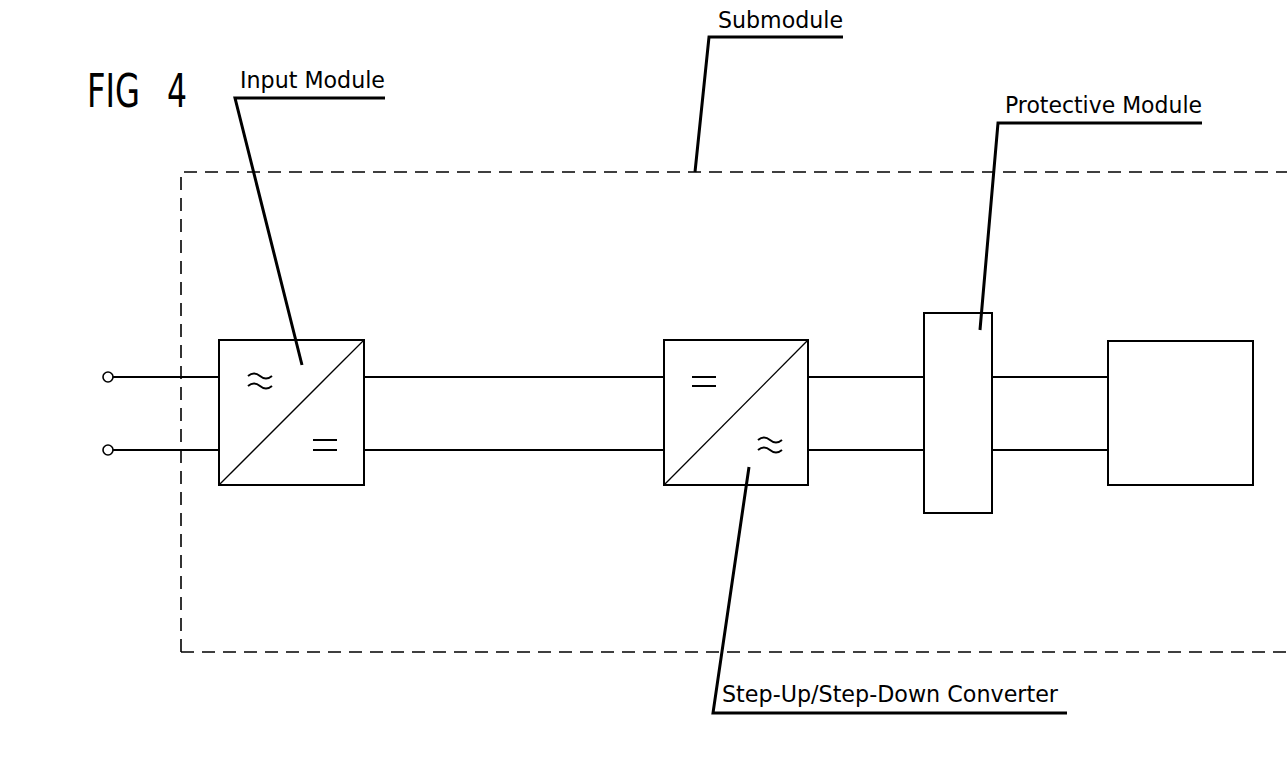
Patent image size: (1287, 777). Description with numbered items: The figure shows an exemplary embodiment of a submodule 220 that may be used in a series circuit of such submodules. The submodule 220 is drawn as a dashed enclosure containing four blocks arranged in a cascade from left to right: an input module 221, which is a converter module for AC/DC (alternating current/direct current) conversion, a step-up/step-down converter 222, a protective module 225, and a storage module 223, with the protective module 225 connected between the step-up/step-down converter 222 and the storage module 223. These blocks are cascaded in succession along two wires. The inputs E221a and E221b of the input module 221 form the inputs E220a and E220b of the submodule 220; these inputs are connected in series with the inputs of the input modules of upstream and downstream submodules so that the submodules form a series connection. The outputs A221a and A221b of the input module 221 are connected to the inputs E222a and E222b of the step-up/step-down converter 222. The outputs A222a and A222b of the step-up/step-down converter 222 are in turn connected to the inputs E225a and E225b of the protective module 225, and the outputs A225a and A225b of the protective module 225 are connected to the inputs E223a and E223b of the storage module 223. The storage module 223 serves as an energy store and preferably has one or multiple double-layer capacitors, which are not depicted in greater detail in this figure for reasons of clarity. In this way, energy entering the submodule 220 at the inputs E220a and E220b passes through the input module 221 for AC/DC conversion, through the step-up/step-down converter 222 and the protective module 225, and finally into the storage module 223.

The submodule 220 is at (754, 172).
The input module 221 is at (330, 485).
The step-up/step-down converter 222 is at (695, 485).
The storage module 223 is at (1178, 485).
The protective module 225 is at (960, 313).
The input of submodule E220a is at (181, 377).
The input of submodule E220b is at (181, 450).
The input of input module E221a is at (219, 377).
The input of input module E221b is at (219, 450).
The output of input module A221a is at (364, 377).
The output of input module A221b is at (364, 450).
The input of step-up/step-down converter E222a is at (664, 377).
The input of step-up/step-down converter E222b is at (664, 450).
The output of step-up/step-down converter A222a is at (808, 377).
The output of step-up/step-down converter A222b is at (808, 450).
The input of protective module E225a is at (924, 377).
The input of protective module E225b is at (924, 450).
The output of protective module A225a is at (992, 377).
The output of protective module A225b is at (992, 450).
The input of storage module E223a is at (1108, 377).
The input of storage module E223b is at (1108, 450).